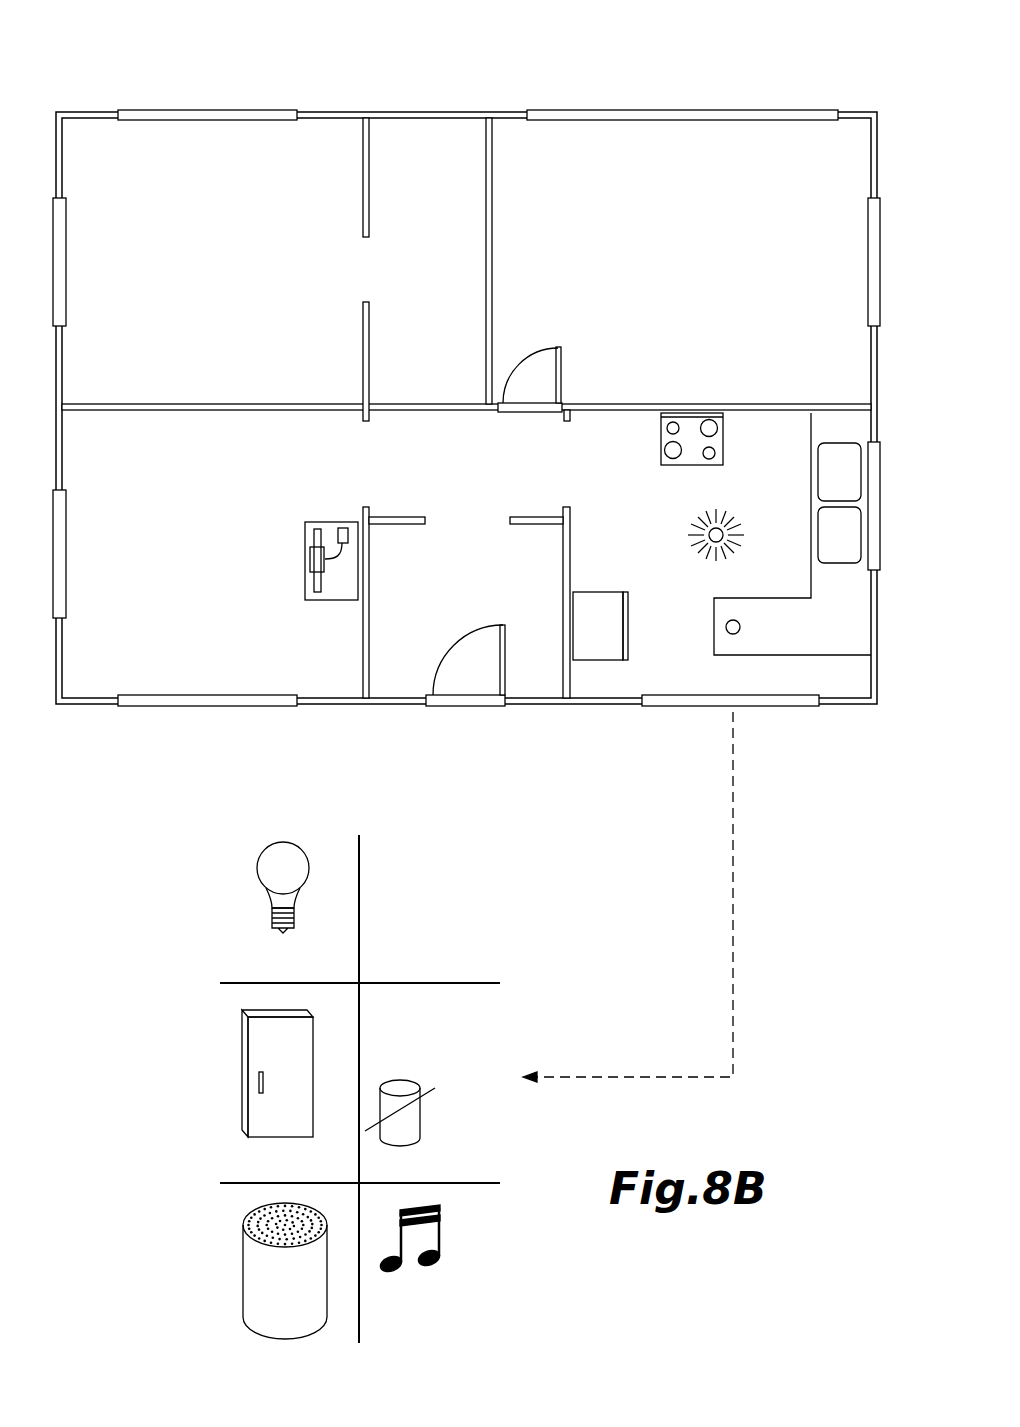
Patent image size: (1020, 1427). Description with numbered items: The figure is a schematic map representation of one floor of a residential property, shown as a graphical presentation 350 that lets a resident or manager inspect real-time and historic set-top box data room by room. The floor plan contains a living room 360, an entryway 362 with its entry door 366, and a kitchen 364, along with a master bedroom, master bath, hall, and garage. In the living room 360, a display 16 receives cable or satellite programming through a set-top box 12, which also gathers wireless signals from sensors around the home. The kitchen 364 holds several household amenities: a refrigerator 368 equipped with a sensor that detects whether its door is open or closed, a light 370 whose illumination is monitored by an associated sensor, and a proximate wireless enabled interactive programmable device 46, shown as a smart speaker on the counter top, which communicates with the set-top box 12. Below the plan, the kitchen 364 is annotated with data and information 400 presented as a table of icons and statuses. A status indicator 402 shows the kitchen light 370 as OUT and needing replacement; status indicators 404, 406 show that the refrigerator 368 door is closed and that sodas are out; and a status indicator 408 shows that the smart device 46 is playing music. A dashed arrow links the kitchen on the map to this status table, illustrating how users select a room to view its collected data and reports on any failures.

The graphical presentation of a floor of the residential property 350 is at (77, 100).
The set-top box 12 is at (343, 528).
The display 16 is at (312, 546).
The proximate wireless enabled interactive programmable device 46 is at (741, 627).
The living room 360 is at (229, 611).
The entryway 362 is at (485, 623).
The kitchen 364 is at (670, 531).
The entry door 366 is at (470, 707).
The refrigerator 368 is at (630, 633).
The light 370 is at (726, 538).
The data and information 400 is at (225, 820).
The status indicator 402 is at (463, 912).
The status indicator 404 is at (490, 1032).
The status indicator 406 is at (490, 1116).
The status indicator 408 is at (455, 1287).